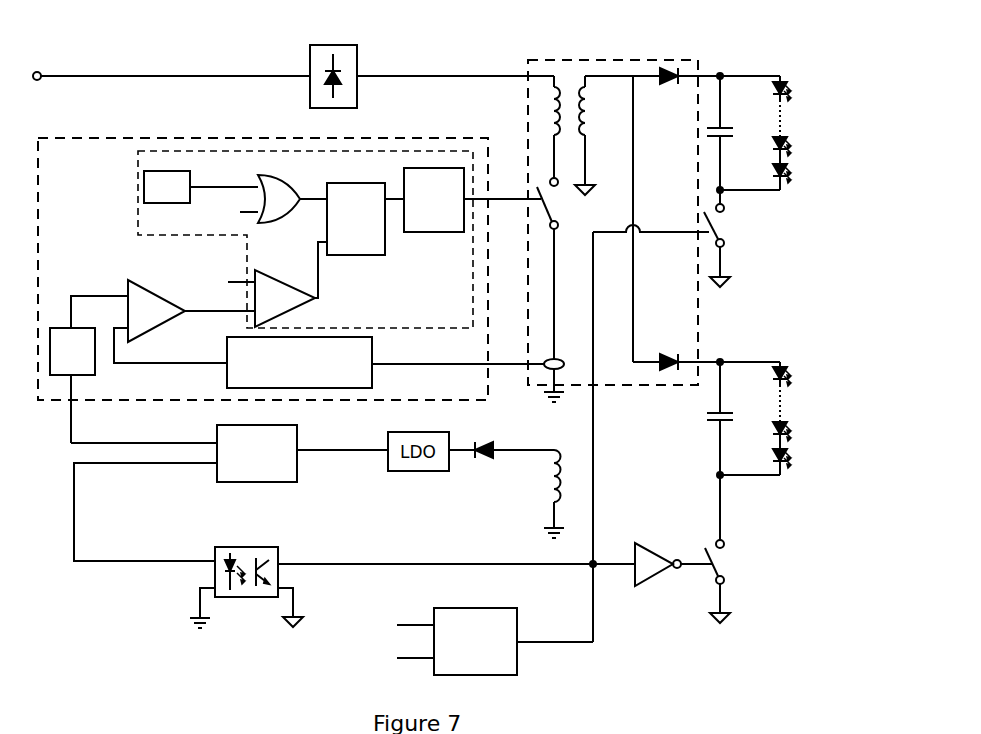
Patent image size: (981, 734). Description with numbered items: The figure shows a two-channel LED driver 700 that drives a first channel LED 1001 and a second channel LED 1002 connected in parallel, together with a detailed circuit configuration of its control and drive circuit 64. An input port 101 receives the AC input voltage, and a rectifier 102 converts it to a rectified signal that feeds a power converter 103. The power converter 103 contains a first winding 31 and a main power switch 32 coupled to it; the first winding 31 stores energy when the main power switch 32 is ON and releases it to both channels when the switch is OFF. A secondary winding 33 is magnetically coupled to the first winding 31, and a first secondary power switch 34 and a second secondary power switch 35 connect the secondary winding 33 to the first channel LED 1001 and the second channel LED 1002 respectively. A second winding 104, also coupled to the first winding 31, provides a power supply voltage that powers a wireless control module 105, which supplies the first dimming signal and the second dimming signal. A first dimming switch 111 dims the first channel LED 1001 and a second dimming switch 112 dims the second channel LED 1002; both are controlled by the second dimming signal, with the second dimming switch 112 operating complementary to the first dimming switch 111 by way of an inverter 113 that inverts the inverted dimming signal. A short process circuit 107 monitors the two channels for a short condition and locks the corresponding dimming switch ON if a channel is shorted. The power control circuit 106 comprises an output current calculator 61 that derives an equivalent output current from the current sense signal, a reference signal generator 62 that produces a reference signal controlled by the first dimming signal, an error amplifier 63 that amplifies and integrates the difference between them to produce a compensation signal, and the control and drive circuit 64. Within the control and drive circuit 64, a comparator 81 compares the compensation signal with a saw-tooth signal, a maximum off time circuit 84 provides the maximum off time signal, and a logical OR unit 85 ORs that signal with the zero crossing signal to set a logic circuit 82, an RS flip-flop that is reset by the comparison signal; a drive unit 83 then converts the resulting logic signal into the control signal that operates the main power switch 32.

The input port 101 is at (46, 73).
The rectifier 102 is at (306, 85).
The power converter 103 is at (524, 69).
The second winding 104 is at (547, 478).
The wireless control module (RF/MCU) 105 is at (300, 468).
The power control circuit 106 is at (263, 269).
The short process circuit 107 is at (479, 641).
The first dimming switch 111 is at (728, 220).
The second dimming switch 112 is at (729, 555).
The inverter 113 is at (656, 583).
The first winding 31 is at (549, 117).
The main power switch 32 is at (559, 200).
The secondary winding 33 is at (589, 120).
The first secondary power switch 34 is at (667, 87).
The second secondary power switch 35 is at (670, 355).
The output current calculator 61 is at (374, 383).
The reference signal generator 62 is at (72, 385).
The error amplifier 63 is at (158, 290).
The control and drive circuit 64 is at (305, 239).
The comparator 81 is at (256, 293).
The logic circuit 82 is at (359, 240).
The drive unit 83 is at (445, 233).
The maximum off time circuit 84 is at (201, 192).
The logical OR unit 85 is at (292, 199).
The two-channel LED driver 700 is at (739, 46).
The first channel LED 1001 is at (772, 133).
The second channel LED 1002 is at (772, 419).